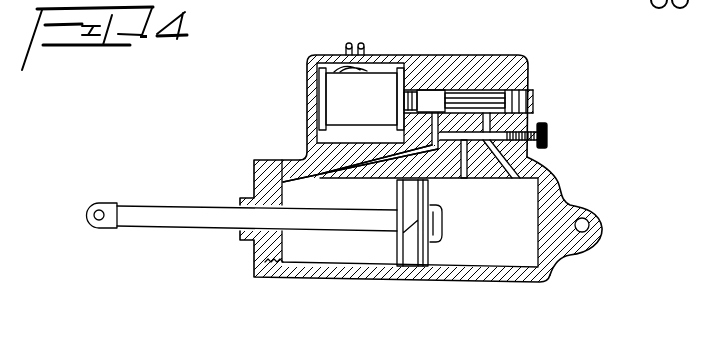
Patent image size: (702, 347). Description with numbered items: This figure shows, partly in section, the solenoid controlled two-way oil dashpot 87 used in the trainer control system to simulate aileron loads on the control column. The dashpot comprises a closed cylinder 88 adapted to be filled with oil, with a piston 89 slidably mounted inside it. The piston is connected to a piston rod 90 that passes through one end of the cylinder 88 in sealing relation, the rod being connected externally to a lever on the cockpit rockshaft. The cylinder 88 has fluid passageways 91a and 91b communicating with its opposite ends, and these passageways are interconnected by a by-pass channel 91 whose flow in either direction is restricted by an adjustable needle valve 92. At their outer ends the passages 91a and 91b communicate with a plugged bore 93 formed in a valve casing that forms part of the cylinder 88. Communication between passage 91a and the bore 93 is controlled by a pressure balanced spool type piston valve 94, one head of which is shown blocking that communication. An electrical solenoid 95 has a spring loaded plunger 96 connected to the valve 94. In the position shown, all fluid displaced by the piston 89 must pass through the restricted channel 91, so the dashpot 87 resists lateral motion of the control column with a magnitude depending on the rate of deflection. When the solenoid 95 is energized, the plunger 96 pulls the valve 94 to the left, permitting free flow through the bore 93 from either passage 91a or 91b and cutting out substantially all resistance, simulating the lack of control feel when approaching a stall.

The two-way oil dashpot 87 is at (493, 290).
The closed cylinder 88 is at (560, 182).
The piston 89 is at (391, 254).
The piston rod 90 is at (178, 229).
The by-pass channel 91 is at (464, 182).
The fluid passageway 91a is at (434, 135).
The fluid passageway 91b is at (503, 182).
The adjustable needle valve 92 is at (548, 137).
The plugged bore 93 is at (528, 72).
The spool type piston valve 94 is at (430, 92).
The electrical solenoid 95 is at (337, 94).
The spring loaded plunger 96 is at (407, 101).